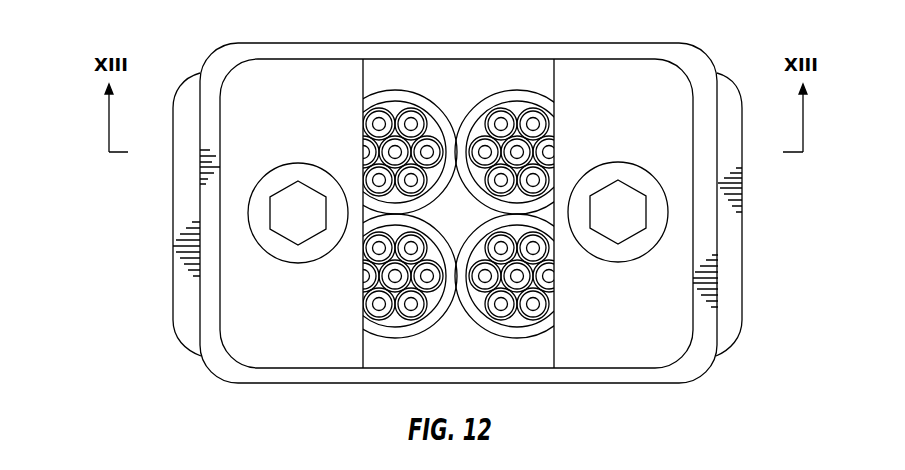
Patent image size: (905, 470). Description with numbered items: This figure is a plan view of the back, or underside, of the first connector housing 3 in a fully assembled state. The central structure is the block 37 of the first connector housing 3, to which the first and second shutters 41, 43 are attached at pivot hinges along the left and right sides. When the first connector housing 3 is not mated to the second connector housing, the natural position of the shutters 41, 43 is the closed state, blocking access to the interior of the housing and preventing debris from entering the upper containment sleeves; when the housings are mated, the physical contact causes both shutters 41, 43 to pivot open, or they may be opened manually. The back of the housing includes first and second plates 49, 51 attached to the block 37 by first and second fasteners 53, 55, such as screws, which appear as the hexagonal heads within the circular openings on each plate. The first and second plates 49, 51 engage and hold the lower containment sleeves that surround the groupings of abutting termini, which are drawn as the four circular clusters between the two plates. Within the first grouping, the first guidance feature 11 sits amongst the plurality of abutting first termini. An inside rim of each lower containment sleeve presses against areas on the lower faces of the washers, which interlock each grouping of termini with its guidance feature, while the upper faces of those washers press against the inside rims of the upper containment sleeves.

The first connector housing 3 is at (132, 191).
The first guidance feature 11 is at (365, 153).
The block 37 is at (525, 377).
The first shutter 41 is at (185, 218).
The second shutter 43 is at (732, 222).
The first plate 49 is at (228, 320).
The second plate 51 is at (663, 350).
The first fastener 53 is at (290, 256).
The second fastener 55 is at (627, 257).